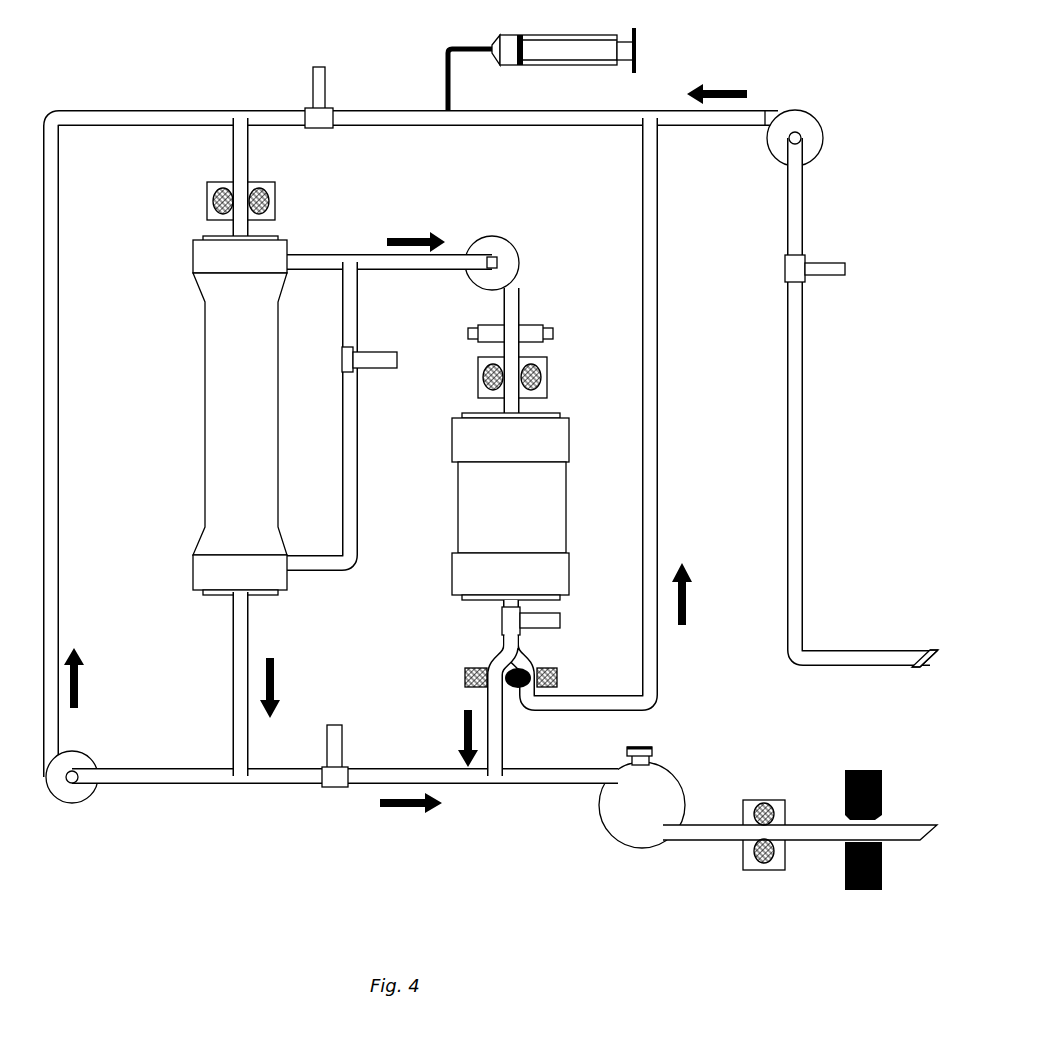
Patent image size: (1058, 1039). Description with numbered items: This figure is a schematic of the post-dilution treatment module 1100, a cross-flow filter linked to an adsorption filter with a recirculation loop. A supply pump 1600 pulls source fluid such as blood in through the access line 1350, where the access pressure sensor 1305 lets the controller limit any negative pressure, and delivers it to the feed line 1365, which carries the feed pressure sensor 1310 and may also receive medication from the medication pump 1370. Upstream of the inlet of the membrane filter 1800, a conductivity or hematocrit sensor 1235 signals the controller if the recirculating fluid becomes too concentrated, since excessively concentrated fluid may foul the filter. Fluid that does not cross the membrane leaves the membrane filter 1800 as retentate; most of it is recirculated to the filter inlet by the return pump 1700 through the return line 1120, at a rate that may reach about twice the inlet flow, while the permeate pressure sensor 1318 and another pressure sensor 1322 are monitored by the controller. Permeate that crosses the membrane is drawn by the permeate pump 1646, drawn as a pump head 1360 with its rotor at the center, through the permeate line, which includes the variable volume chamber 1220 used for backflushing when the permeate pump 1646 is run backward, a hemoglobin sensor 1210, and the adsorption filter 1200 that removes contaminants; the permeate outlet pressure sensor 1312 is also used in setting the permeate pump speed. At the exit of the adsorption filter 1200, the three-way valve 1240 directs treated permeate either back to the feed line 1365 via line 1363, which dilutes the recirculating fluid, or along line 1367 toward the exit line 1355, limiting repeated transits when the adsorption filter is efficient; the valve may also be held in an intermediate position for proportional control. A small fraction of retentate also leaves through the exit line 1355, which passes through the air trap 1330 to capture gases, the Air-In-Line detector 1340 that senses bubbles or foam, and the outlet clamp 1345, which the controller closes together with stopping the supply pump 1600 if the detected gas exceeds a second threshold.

The post-dilution treatment module 1100 is at (203, 912).
The return line 1120 is at (55, 307).
The adsorption filter 1200 is at (500, 505).
The hemoglobin sensor 1210 is at (559, 368).
The variable volume chamber 1220 is at (546, 315).
The sensor 1235 is at (284, 203).
The 3-way valve 1240 is at (453, 668).
The access pressure sensor 1305 is at (838, 268).
The feed pressure sensor 1310 is at (318, 67).
The permeate outlet pressure sensor 1312 is at (556, 618).
The permeate pressure sensor 1318 is at (385, 355).
The pressure sensor 1322 is at (332, 790).
The air trap 1330 is at (672, 778).
The Air-In-Line detector 1340 is at (771, 790).
The outlet clamp 1345 is at (869, 758).
The access line 1350 is at (843, 655).
The exit line 1355 is at (905, 830).
The pump 1360 is at (455, 250).
The line 1363 is at (660, 273).
The feed line 1365 is at (555, 118).
The fluid line 1367 is at (503, 752).
The medication pump 1370 is at (654, 40).
The supply pump 1600 is at (815, 133).
The permeate pump 1646 is at (505, 260).
The return pump 1700 is at (78, 800).
The membrane filter 1800 is at (245, 445).